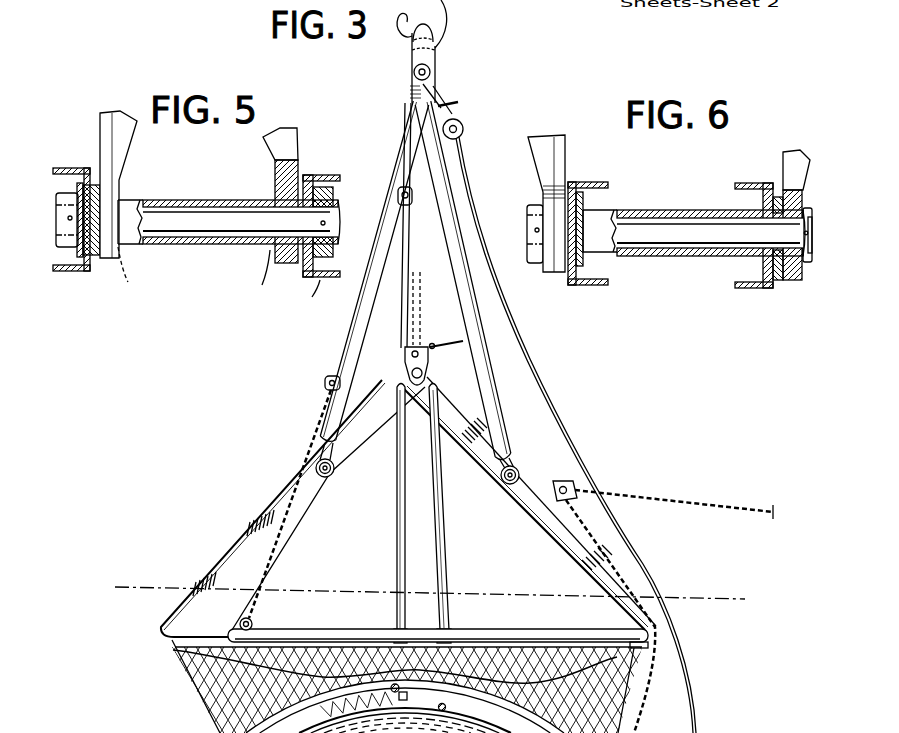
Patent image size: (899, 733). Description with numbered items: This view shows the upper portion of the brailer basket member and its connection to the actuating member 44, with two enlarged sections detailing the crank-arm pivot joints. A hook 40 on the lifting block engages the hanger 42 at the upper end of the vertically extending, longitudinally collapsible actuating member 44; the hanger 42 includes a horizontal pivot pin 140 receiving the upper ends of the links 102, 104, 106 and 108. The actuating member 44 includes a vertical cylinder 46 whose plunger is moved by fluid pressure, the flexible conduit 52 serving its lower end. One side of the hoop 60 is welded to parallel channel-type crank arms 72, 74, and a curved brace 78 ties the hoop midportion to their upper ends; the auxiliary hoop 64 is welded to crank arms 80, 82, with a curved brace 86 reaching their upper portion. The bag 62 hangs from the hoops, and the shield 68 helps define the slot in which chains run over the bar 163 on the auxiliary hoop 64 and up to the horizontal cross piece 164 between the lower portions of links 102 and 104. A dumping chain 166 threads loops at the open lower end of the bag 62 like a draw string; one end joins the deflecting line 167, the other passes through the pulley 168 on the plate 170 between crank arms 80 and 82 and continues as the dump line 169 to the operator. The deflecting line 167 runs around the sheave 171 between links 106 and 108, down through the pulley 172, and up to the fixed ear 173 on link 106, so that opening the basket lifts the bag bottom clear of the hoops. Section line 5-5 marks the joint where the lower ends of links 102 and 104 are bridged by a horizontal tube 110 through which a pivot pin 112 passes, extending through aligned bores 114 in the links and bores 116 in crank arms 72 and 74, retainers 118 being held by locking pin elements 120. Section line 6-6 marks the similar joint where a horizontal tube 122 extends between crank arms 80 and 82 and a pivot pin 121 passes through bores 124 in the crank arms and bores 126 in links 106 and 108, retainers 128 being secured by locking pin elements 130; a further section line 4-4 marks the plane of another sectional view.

In FIG. 3, the hook 40 is at (448, 32).
In FIG. 3, the hanger 42 is at (448, 55).
In FIG. 3, the horizontal pivot pin 140 is at (411, 72).
In FIG. 3, the sheave 171 is at (464, 126).
In FIG. 3, the flexible conduit 52 is at (455, 102).
In FIG. 3, the fixed ear 173 is at (400, 180).
In FIG. 3, the link 104 is at (351, 319).
In FIG. 5, the link 104 is at (291, 153).
In FIG. 3, the link 108 is at (458, 252).
In FIG. 6, the link 108 is at (790, 163).
In FIG. 3, the actuating member 44 is at (432, 324).
In FIG. 3, the vertical cylinder 46 is at (423, 298).
In FIG. 3, the pulley 172 is at (408, 350).
In FIG. 3, the crank arm 82 is at (575, 545).
In FIG. 6, the crank arm 82 is at (757, 289).
In FIG. 3, the deflecting line 167 is at (703, 700).
In FIG. 3, the crank arm 74 is at (272, 540).
In FIG. 5, the crank arm 74 is at (306, 297).
In FIG. 3, the plate 170 is at (562, 500).
In FIG. 3, the section line 5— 5 is at (306, 446).
In FIG. 3, the section line 6— 6 is at (527, 452).
In FIG. 3, the section line 4— 4 is at (140, 594).
In FIG. 3, the brace 86 is at (396, 572).
In FIG. 3, the brace 78 is at (445, 572).
In FIG. 3, the auxiliary hoop 64 is at (505, 637).
In FIG. 3, the hoop 60 is at (410, 686).
In FIG. 3, the bag 62 is at (213, 703).
In FIG. 3, the shield 68 is at (522, 683).
In FIG. 3, the horizontal cross piece 164 is at (324, 385).
In FIG. 3, the bar 163 is at (253, 624).
In FIG. 3, the pulley 168 is at (567, 486).
In FIG. 3, the dumping chain 166 is at (641, 729).
In FIG. 3, the dump line 169 is at (773, 507).
In FIG. 5, the crank arm 72 is at (70, 273).
In FIG. 5, the locking pin element 120 is at (69, 220).
In FIG. 5, the retainer 118 is at (70, 188).
In FIG. 5, the link 102 is at (118, 146).
In FIG. 5, the aligned bores 116 is at (335, 197).
In FIG. 5, the pivot pin 112 is at (160, 228).
In FIG. 5, the horizontal tube 110 is at (180, 200).
In FIG. 5, the aligned bores 114 is at (194, 275).
In FIG. 6, the crank arm 80 is at (588, 287).
In FIG. 6, the retainer 128 is at (540, 207).
In FIG. 6, the locking pin element 130 is at (537, 234).
In FIG. 6, the link 106 is at (558, 155).
In FIG. 6, the aligned bores 126 is at (780, 281).
In FIG. 6, the pivot pin 121 is at (637, 234).
In FIG. 6, the horizontal tube 122 is at (640, 210).
In FIG. 6, the aligned bores 124 is at (747, 257).